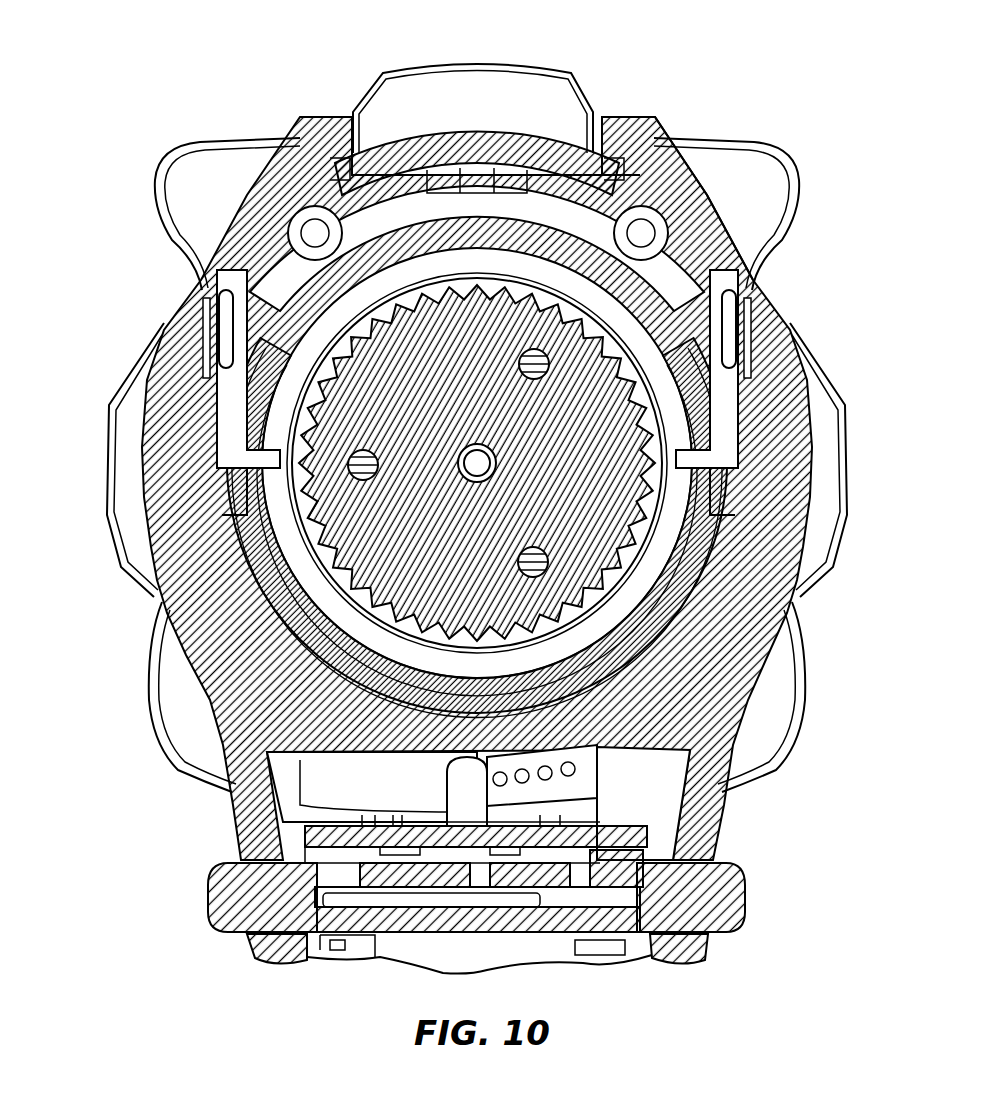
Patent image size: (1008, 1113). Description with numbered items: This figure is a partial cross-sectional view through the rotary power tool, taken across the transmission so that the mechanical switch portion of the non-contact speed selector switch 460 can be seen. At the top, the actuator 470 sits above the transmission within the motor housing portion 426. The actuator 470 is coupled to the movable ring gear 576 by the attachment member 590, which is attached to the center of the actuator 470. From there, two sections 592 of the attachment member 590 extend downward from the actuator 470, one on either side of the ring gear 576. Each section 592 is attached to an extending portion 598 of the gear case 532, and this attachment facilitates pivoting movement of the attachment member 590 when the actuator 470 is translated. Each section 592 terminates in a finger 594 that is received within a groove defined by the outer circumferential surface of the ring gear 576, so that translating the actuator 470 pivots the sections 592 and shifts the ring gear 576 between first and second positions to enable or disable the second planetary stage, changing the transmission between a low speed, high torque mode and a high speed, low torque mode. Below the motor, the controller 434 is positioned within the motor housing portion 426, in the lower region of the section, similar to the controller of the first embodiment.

The motor housing portion 426 is at (650, 175).
The controller 434 is at (640, 835).
The non-contact speed selector switch 460 is at (604, 90).
The actuator 470 is at (441, 85).
The gear case 532 is at (703, 528).
The ring gear 576 is at (297, 527).
The attachment member 590 is at (325, 207).
The sections 592 is at (243, 263).
The finger 594 is at (225, 512).
The extending portion 598 is at (218, 318).